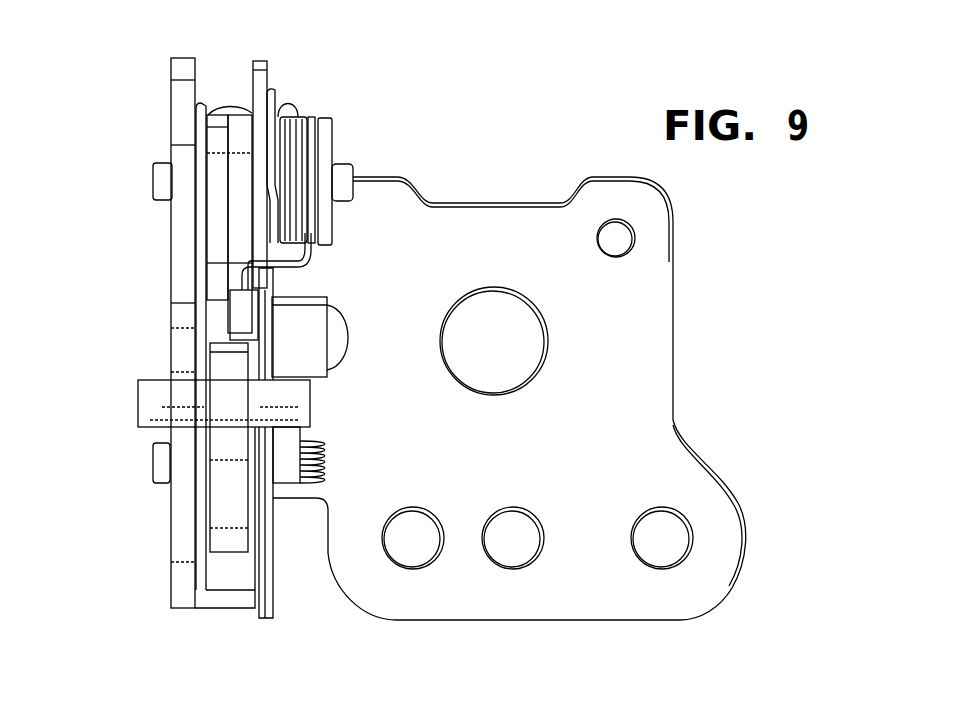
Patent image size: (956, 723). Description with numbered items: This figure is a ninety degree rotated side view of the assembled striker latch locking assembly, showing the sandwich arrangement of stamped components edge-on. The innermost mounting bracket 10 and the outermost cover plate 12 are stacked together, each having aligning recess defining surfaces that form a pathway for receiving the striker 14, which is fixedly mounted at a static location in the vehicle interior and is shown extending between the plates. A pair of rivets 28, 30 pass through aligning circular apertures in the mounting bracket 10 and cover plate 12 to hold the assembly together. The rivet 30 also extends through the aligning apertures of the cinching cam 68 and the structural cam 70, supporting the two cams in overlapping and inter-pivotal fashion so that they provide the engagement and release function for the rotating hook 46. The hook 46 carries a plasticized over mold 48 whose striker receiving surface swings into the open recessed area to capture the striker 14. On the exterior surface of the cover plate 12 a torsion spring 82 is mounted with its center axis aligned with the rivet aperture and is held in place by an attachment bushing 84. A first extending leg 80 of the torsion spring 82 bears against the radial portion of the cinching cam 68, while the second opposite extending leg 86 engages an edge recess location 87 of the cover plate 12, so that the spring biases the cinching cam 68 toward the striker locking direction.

The mounting bracket 10 is at (650, 292).
The cover plate 12 is at (268, 592).
The striker 14 is at (147, 400).
The rivet 28 is at (295, 457).
The rivet 30 is at (162, 178).
The hook 46 is at (223, 491).
The plasticized over mold 48 is at (203, 530).
The cinching cam 68 is at (220, 130).
The structural cam 70 is at (240, 122).
The first extending leg 80 is at (270, 90).
The torsion spring 82 is at (302, 117).
The attachment bushing 84 is at (320, 118).
The second extending leg 86 is at (288, 268).
The edge recess location 87 is at (312, 260).